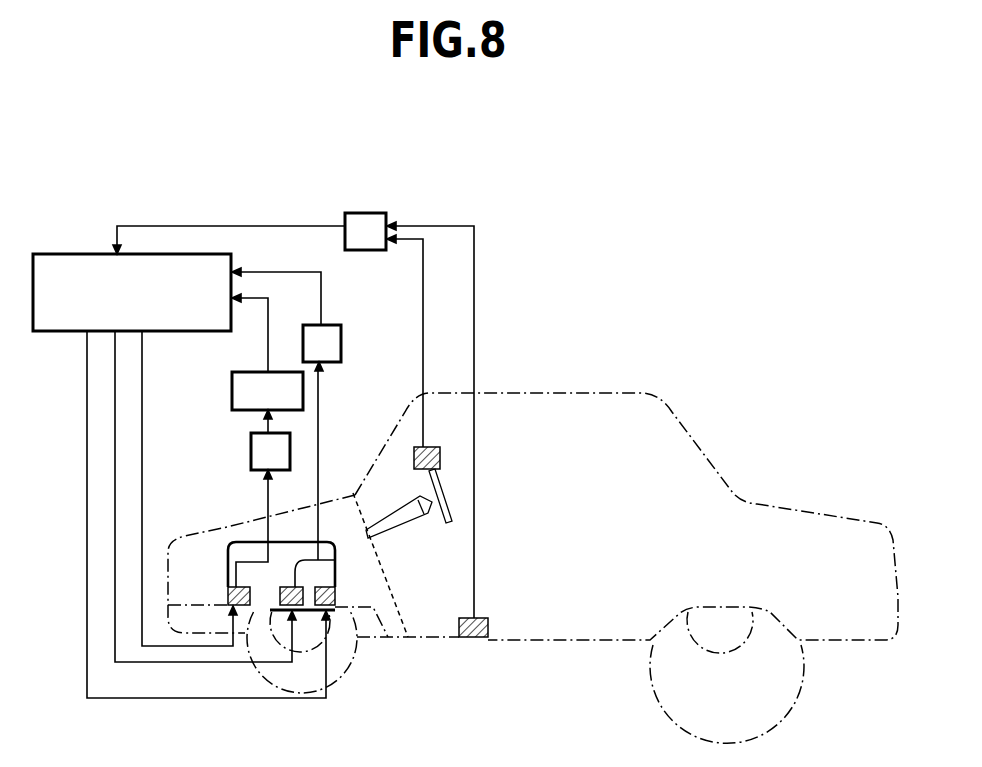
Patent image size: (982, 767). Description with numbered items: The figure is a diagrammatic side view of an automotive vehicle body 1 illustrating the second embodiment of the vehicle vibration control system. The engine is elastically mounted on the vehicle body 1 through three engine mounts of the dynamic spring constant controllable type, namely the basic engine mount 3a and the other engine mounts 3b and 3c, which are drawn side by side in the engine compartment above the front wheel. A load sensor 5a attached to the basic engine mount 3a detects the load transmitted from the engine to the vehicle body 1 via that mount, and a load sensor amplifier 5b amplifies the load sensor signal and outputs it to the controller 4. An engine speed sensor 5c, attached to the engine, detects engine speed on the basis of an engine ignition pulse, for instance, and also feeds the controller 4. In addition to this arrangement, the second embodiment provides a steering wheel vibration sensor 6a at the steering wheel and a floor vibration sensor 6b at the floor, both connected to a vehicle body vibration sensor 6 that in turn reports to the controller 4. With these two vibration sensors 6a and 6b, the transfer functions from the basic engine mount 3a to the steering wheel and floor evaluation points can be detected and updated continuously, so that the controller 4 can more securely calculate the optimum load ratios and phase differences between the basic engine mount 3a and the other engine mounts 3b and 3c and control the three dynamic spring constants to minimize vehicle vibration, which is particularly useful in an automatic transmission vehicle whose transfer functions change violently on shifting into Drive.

The vehicle body 1 is at (613, 393).
The basic engine mount 3a is at (228, 596).
The engine mount 3b is at (325, 578).
The engine mount 3c is at (335, 598).
The controller 4 is at (56, 254).
The load sensor 5a is at (251, 452).
The load sensor amplifier 5b is at (232, 392).
The engine speed sensor 5c is at (341, 345).
The vehicle body vibration sensor 6 is at (362, 213).
The steering wheel vibration sensor 6a is at (414, 458).
The floor vibration sensor 6b is at (488, 622).